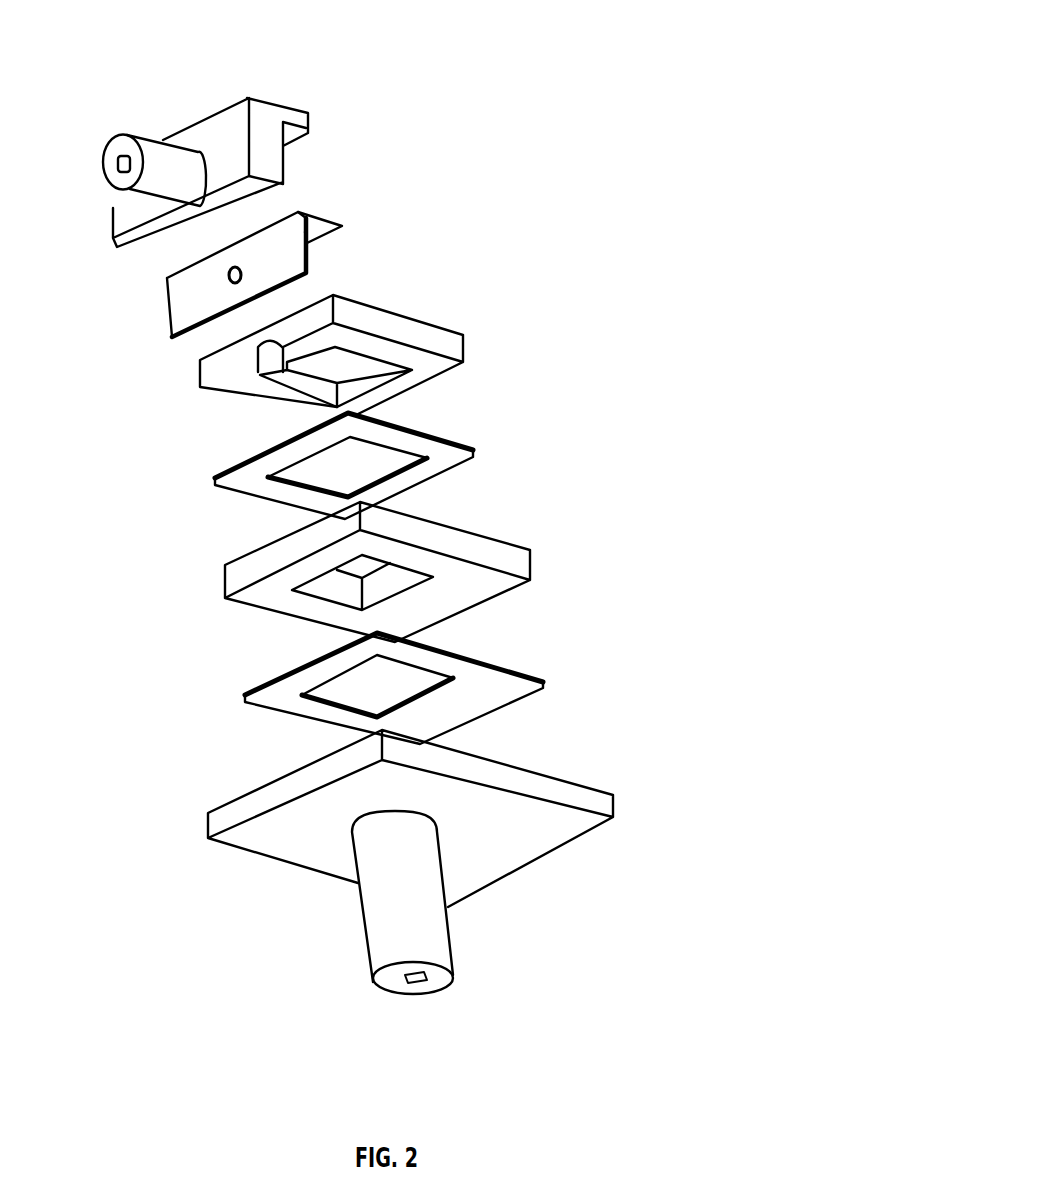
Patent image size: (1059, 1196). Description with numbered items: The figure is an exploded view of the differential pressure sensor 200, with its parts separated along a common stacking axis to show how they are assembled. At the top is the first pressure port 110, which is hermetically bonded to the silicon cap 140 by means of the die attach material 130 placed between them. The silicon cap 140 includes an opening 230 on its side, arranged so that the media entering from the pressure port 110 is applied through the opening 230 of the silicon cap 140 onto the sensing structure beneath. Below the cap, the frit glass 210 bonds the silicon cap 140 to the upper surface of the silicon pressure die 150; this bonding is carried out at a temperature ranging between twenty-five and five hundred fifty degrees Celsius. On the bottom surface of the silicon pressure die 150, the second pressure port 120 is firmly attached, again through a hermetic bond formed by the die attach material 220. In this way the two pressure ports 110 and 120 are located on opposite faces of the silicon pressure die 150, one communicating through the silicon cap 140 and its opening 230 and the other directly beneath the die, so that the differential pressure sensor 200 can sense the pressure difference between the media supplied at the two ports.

The differential pressure sensor 200 is at (604, 76).
The pressure port 110 is at (132, 192).
The die attach material 130 is at (196, 294).
The silicon cap 140 is at (455, 335).
The opening 230 is at (250, 360).
The frit glass 210 is at (450, 452).
The silicon pressure die 150 is at (511, 552).
The die attach material 220 is at (508, 680).
The pressure port 120 is at (448, 932).